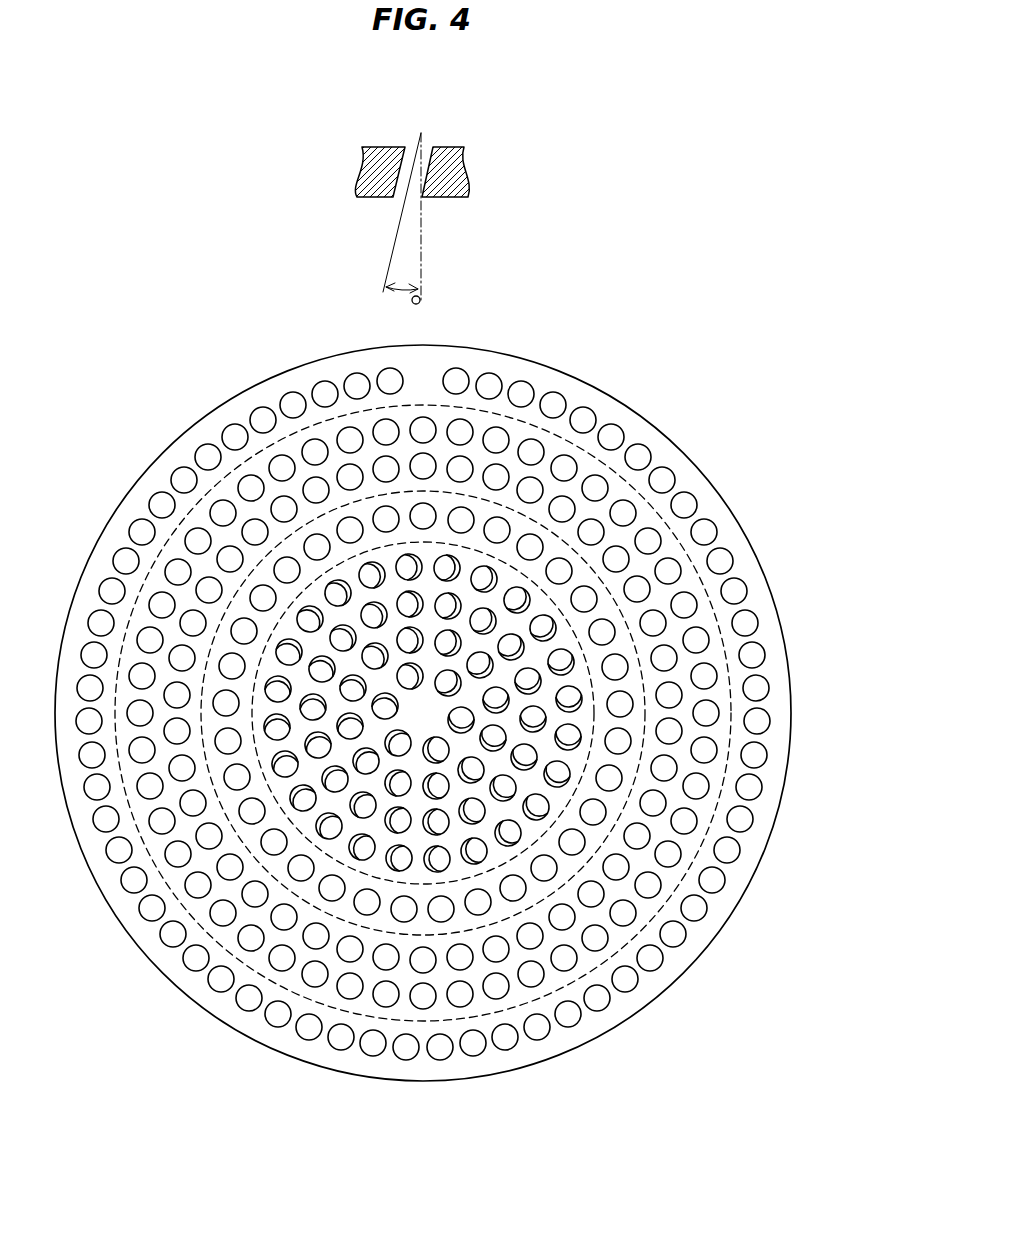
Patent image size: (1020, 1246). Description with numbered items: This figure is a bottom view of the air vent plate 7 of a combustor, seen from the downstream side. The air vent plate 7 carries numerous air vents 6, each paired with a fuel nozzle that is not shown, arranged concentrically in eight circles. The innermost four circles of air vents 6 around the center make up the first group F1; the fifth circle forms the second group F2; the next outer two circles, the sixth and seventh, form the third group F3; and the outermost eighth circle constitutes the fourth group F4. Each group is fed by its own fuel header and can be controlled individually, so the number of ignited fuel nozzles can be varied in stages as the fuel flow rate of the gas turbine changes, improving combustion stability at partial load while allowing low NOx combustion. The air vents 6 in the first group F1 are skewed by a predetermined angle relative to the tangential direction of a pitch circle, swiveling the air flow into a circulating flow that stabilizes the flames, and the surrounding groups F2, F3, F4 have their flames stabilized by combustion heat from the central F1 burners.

The air vent 6 is at (412, 175).
The air vent plate 7 is at (465, 197).
The first group F1 is at (473, 600).
The second group F2 is at (596, 618).
The third group F3 is at (694, 696).
The fourth group F4 is at (761, 810).